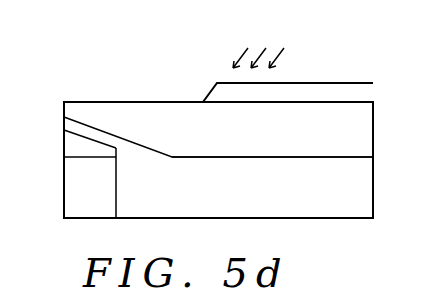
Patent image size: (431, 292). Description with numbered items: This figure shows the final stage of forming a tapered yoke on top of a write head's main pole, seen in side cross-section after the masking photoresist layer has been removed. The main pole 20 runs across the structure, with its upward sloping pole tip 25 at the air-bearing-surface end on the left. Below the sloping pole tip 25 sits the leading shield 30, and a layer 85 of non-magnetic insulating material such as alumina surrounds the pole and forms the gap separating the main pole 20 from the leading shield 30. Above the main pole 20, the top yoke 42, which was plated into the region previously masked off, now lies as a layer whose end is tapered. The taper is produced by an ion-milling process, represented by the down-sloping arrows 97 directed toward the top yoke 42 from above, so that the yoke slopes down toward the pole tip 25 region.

The top yoke 42 is at (360, 90).
The main pole 20 is at (360, 124).
The layer of non-magnetic insulating material 85 is at (360, 186).
The pole tip 25 is at (77, 106).
The leading shield 30 is at (79, 186).
The down-sloping arrows 97 is at (258, 47).